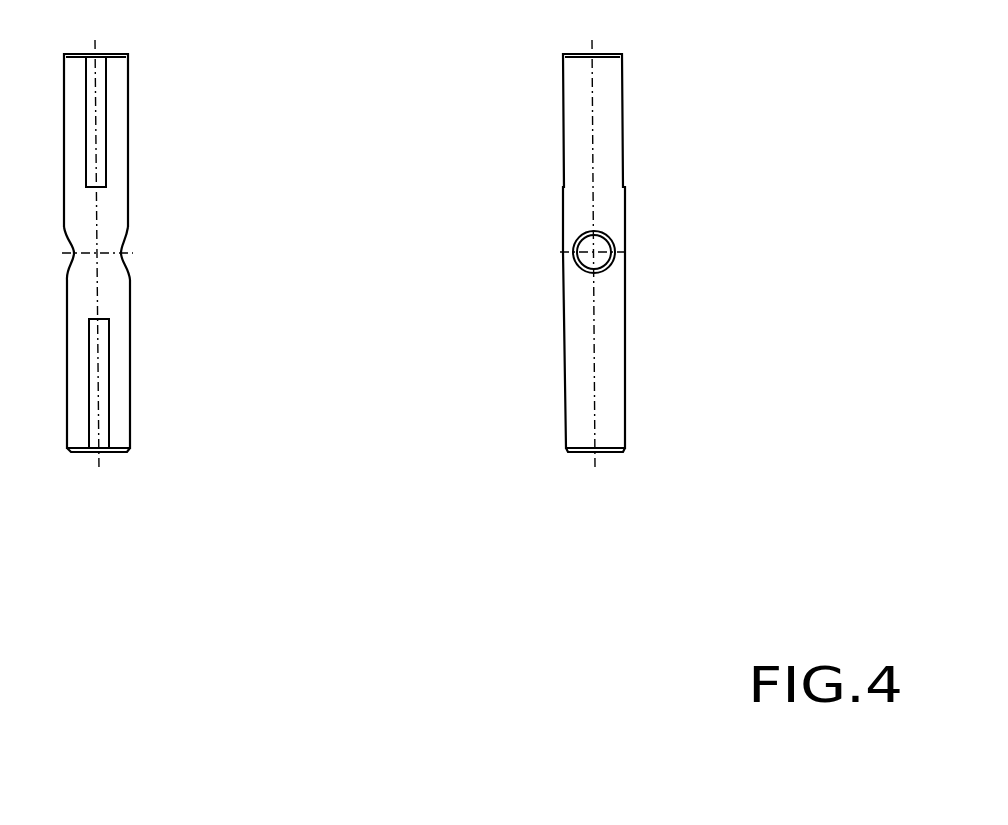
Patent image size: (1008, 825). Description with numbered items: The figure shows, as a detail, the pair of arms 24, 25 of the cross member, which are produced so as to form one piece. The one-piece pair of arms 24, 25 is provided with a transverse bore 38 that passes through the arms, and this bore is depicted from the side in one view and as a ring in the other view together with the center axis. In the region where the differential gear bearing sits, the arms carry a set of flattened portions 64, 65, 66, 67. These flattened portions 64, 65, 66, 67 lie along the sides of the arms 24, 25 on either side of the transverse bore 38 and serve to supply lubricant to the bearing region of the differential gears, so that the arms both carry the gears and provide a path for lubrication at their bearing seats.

The arm 24 is at (128, 135).
The arm 25 is at (130, 412).
The flattened portion 65 is at (102, 182).
The flattened portion 67 is at (105, 363).
The flattened portion 64 is at (561, 170).
The flattened portion 66 is at (565, 355).
The transverse bore 38 is at (602, 252).